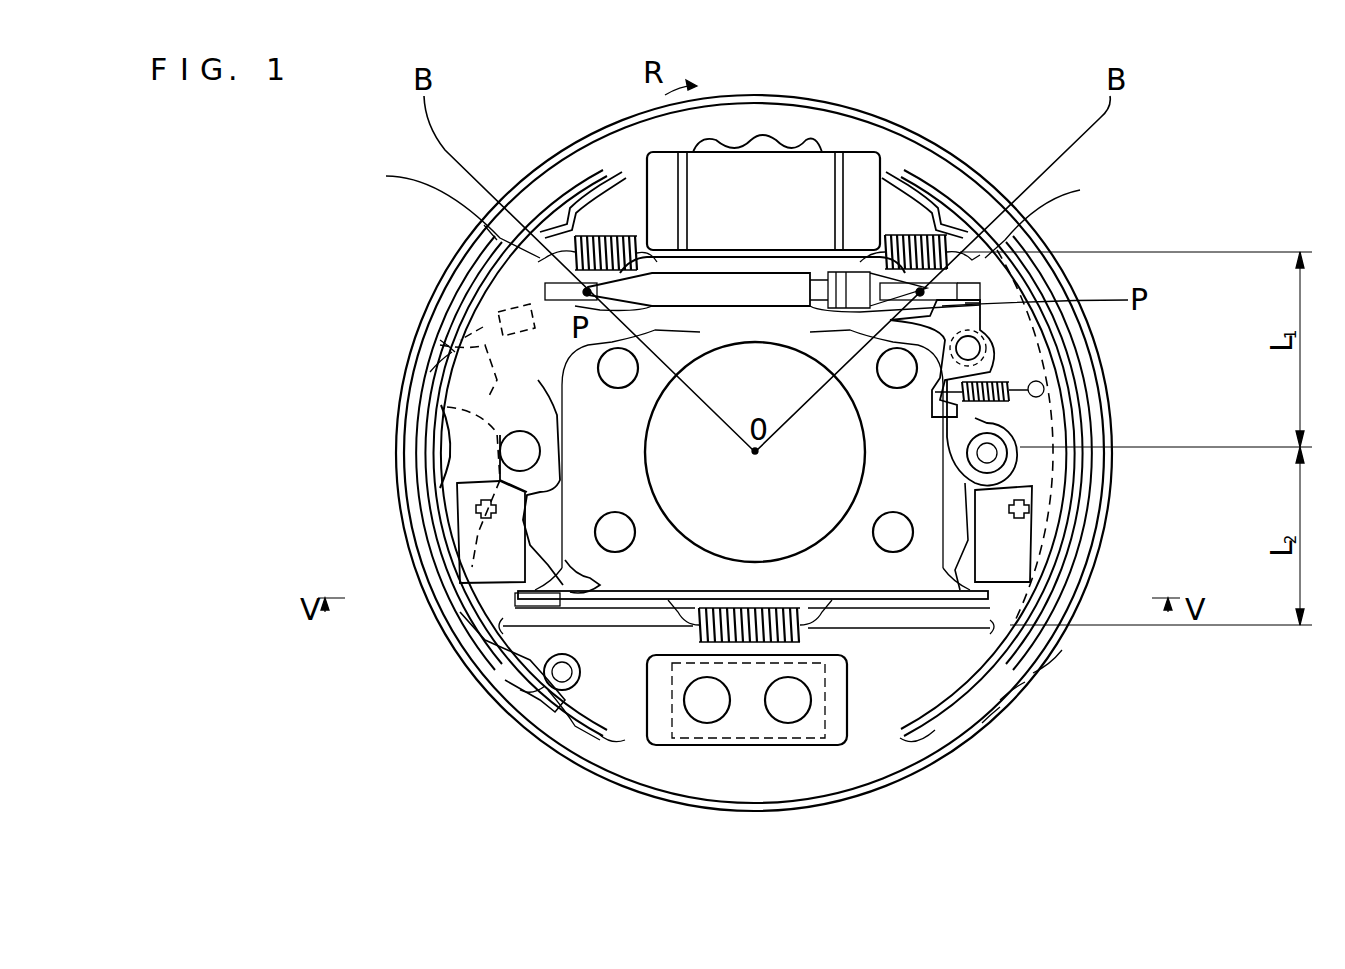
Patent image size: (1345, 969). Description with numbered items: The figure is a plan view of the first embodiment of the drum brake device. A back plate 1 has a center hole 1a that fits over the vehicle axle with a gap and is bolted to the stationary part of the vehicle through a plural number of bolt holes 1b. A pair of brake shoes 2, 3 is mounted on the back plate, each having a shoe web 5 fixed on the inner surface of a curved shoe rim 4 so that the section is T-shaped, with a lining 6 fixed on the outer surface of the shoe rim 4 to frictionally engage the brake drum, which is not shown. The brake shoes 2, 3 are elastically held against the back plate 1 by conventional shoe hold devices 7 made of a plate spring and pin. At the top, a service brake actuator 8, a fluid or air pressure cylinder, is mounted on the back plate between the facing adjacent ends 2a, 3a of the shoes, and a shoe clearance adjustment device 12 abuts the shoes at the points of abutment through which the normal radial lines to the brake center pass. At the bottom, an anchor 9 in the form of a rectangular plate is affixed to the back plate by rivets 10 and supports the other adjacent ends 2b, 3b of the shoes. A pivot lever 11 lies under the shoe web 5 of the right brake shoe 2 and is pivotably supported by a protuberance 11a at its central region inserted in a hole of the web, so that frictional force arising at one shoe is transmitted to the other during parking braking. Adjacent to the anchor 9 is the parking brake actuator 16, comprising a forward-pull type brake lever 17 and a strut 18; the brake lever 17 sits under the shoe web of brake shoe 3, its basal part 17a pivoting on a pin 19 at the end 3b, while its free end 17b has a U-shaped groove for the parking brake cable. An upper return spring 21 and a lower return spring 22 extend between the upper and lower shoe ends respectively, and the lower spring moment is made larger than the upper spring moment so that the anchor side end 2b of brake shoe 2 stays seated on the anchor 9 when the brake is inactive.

The back plate 1 is at (1006, 180).
The center hole 1a is at (650, 490).
The bolt holes 1b is at (622, 388).
The brake shoe 2 is at (1036, 255).
The adjacent end of brake shoe 2a is at (905, 178).
The other adjacent end of brake shoe 2b is at (870, 742).
The brake shoe 3 is at (410, 447).
The adjacent end of brake shoe 3a is at (626, 178).
The other adjacent end of brake shoe 3b is at (620, 776).
The shoe rim 4 is at (445, 368).
The shoe web 5 is at (452, 352).
The lining 6 is at (497, 240).
The shoe hold device 7 is at (470, 510).
The service brake actuator 8 is at (738, 142).
The anchor 9 is at (713, 745).
The rivets 10 is at (695, 722).
The pivot lever 11 is at (1010, 502).
The protuberance 11a is at (1008, 450).
The shoe clearance adjustment device 12 is at (794, 268).
The parking brake actuator 16 is at (512, 598).
The brake lever 17 is at (594, 576).
The basal part of lever 17a is at (540, 684).
The free end of lever 17b is at (480, 300).
The strut 18 is at (572, 735).
The pin 19 is at (526, 712).
The upper return spring 21 is at (970, 330).
The lower return spring 22 is at (757, 646).